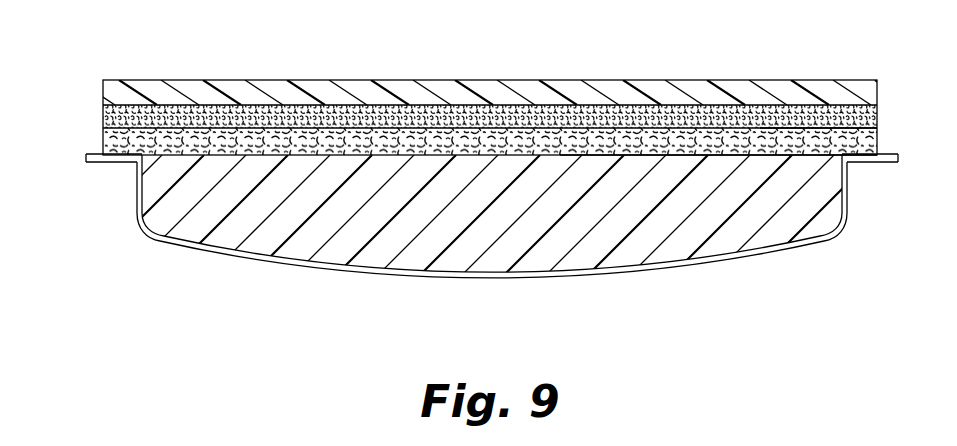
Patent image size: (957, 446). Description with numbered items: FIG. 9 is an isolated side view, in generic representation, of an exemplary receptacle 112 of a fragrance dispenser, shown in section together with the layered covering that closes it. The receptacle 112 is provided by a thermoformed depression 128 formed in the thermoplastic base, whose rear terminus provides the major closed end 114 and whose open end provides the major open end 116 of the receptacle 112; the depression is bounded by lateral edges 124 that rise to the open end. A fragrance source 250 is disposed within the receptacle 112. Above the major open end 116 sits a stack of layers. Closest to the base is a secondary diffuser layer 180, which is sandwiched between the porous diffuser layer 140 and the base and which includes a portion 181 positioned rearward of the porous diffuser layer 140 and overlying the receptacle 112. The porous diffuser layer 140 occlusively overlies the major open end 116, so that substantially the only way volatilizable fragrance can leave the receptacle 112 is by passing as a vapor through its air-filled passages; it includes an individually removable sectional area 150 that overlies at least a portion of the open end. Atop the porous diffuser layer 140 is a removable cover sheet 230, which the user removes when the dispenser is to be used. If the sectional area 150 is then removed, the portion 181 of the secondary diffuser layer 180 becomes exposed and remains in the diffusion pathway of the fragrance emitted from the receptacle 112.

The receptacle 112 is at (228, 240).
The major closed end 114 is at (337, 270).
The major open end 116 is at (673, 153).
The lateral edges 124 is at (150, 196).
The thermoformed depression 128 is at (590, 276).
The porous diffuser layer 140 is at (780, 115).
The individually removable sectional area 150 is at (458, 117).
The secondary diffuser layer 180 is at (110, 147).
The portion of secondary diffuser layer 181 is at (348, 136).
The removable cover sheet 230 is at (187, 88).
The fragrance source 250 is at (502, 256).